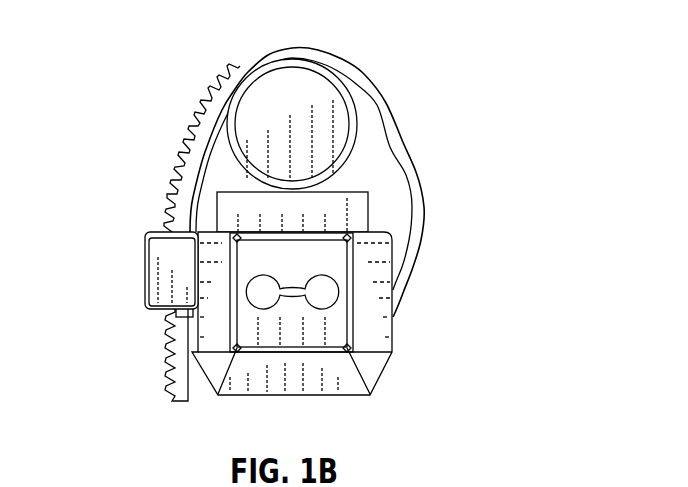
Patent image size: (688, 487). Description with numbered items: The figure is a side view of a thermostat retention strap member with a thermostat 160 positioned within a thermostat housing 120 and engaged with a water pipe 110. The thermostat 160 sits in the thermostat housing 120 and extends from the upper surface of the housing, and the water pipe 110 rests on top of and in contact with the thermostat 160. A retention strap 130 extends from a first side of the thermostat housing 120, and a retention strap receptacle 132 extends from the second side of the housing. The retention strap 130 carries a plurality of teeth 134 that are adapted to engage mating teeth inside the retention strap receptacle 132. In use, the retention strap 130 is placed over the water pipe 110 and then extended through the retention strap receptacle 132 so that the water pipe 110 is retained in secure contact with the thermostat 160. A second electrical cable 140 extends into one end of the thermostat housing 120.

The water pipe 110 is at (318, 97).
The thermostat housing 120 is at (380, 342).
The retention strap 130 is at (395, 147).
The retention strap receptacle 132 is at (165, 283).
The teeth 134 is at (188, 162).
The second electrical cable 140 is at (325, 290).
The thermostat 160 is at (343, 215).